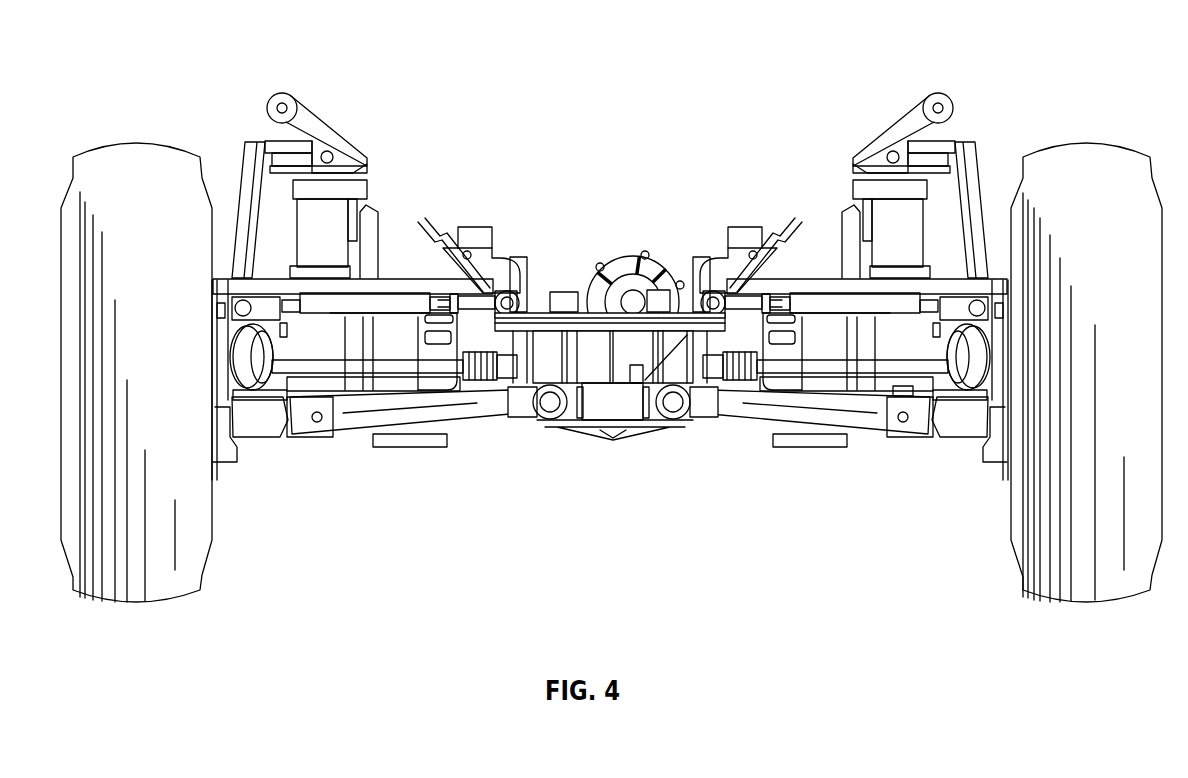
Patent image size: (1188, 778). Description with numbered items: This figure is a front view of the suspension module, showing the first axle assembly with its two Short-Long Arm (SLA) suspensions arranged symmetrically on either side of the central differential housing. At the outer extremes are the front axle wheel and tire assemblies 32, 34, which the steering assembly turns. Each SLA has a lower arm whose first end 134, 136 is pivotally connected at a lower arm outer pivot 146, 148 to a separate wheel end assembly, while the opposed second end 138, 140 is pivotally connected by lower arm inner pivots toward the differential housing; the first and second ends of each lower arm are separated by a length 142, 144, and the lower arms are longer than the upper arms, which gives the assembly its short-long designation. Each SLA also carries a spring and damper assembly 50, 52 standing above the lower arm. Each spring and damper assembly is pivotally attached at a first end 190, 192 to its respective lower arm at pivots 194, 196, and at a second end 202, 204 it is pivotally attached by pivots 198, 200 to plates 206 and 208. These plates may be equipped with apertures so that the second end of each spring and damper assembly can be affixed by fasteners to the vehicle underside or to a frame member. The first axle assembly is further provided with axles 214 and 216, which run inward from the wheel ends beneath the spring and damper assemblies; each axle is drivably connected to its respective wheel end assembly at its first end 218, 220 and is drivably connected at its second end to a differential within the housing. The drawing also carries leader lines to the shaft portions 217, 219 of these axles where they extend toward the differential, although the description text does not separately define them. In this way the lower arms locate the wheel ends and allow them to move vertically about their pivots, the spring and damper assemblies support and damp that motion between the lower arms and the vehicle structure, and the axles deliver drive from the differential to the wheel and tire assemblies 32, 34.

The wheel and tire assembly 32 is at (158, 587).
The wheel and tire assembly 34 is at (1100, 588).
The spring and damper assembly 50 is at (333, 218).
The spring and damper assembly 52 is at (908, 231).
The lower arm first end 134 is at (305, 430).
The lower arm first end 136 is at (920, 430).
The lower arm second end 138 is at (522, 408).
The lower arm second end 140 is at (700, 405).
The lower arm length 142 is at (380, 423).
The lower arm length 144 is at (838, 422).
The lower arm outer pivot 146 is at (213, 395).
The lower arm outer pivot 148 is at (997, 363).
The spring and damper assembly first end 190 is at (287, 397).
The spring and damper assembly first end 192 is at (903, 388).
The pivot 194 is at (320, 422).
The pivot 196 is at (905, 422).
The pivot 198 is at (329, 151).
The pivot 200 is at (893, 151).
The spring and damper assembly second end 202 is at (310, 212).
The spring and damper assembly second end 204 is at (890, 215).
The plate 206 is at (312, 115).
The plate 208 is at (912, 118).
The axle 214 is at (417, 360).
The axle 216 is at (850, 370).
The left half shaft 217 is at (440, 368).
The axle first end 218 is at (947, 383).
The right half shaft 219 is at (775, 367).
The axle first end 220 is at (246, 313).